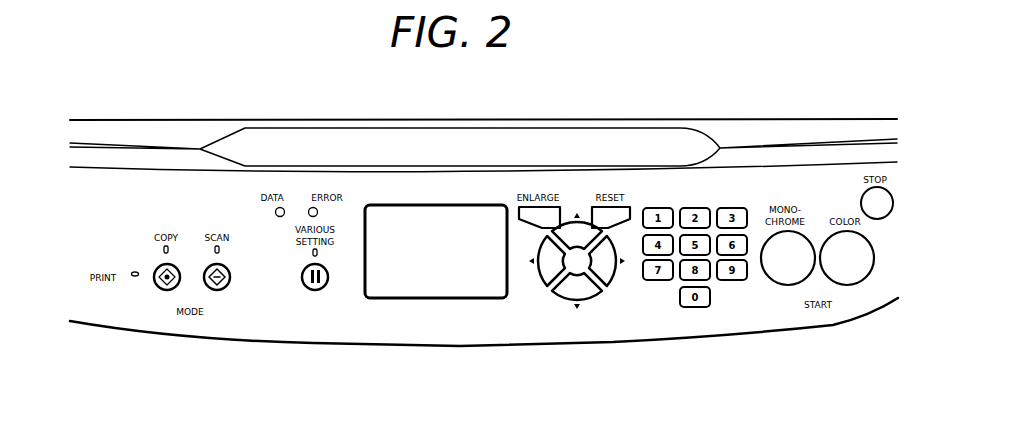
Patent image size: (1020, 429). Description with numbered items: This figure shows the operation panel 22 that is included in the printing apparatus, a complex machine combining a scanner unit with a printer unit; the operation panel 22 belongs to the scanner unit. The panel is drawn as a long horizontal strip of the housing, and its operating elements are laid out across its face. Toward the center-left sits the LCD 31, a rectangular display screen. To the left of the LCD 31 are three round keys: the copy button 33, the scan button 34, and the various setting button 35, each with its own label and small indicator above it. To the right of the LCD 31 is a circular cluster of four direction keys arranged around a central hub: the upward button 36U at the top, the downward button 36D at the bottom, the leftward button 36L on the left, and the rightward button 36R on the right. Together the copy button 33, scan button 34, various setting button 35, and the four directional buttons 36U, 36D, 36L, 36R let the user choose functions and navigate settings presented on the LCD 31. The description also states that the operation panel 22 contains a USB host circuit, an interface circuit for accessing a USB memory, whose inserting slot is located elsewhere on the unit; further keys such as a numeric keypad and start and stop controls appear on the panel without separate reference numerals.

The operation panel 22 is at (828, 118).
The LCD 31 is at (427, 295).
The copy button 33 is at (163, 287).
The scan button 34 is at (216, 287).
The various setting button 35 is at (314, 287).
The upward button 36U is at (567, 227).
The downward button 36D is at (574, 293).
The leftward button 36L is at (544, 276).
The rightward button 36R is at (606, 273).